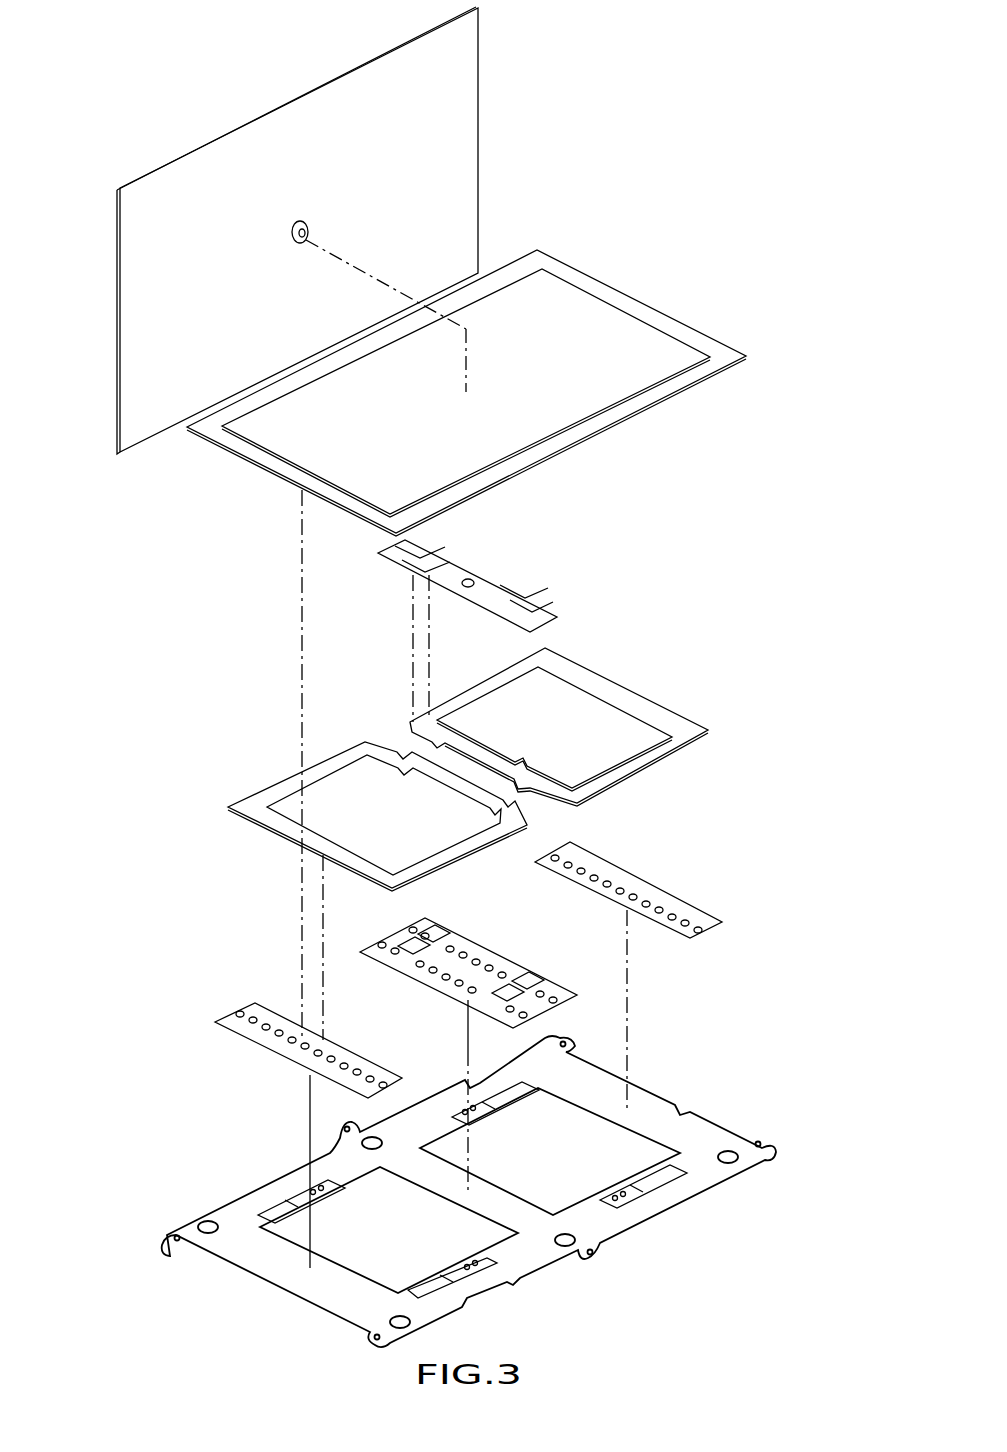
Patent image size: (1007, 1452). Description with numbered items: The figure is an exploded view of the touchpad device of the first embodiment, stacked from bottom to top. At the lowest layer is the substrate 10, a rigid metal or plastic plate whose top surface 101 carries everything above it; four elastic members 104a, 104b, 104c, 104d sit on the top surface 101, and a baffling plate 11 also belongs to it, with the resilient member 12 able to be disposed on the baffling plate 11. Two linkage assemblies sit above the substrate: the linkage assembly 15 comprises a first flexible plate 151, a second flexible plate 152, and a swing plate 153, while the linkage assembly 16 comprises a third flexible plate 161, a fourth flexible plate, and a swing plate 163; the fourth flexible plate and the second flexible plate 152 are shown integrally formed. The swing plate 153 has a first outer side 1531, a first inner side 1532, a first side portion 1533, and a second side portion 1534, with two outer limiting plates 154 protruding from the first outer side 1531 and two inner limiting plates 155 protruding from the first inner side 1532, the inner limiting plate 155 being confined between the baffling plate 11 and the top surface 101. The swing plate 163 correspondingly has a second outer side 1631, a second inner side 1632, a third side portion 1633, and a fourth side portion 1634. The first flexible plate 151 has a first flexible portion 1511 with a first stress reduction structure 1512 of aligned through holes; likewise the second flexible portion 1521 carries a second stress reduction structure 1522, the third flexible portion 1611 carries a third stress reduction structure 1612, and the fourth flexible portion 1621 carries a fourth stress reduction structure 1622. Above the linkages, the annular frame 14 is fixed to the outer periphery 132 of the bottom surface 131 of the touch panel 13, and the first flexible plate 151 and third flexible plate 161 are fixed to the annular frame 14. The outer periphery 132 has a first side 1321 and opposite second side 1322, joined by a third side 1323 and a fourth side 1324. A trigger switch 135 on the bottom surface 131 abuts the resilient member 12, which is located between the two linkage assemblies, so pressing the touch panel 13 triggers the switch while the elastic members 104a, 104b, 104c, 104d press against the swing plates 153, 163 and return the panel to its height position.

The substrate 10 is at (469, 1191).
The top surface 101 is at (225, 1205).
The elastic member 104a is at (433, 1280).
The elastic member 104b is at (280, 1205).
The elastic member 104c is at (608, 1190).
The elastic member 104d is at (500, 1100).
The baffling plate 11 is at (498, 598).
The resilient member 12 is at (468, 578).
The touch panel 13 is at (310, 230).
The bottom surface 131 is at (443, 153).
The outer periphery 132 is at (348, 19).
The first side 1321 is at (130, 247).
The second side 1322 is at (473, 100).
The third side 1323 is at (287, 118).
The fourth side 1324 is at (232, 385).
The trigger switch 135 is at (308, 232).
The annular frame 14 is at (728, 318).
The linkage assembly 15 is at (362, 800).
The first flexible plate 151 is at (302, 1030).
The first flexible portion 1511 is at (240, 1020).
The first stress reduction structure 1512 is at (270, 1032).
The second flexible plate 152 is at (550, 970).
The second flexible portion 1521 is at (373, 945).
The second stress reduction structure 1522 is at (450, 990).
The swing plate 153 is at (333, 752).
The first outer side 1531 is at (275, 820).
The first inner side 1532 is at (442, 790).
The first side portion 1533 is at (487, 842).
The second side portion 1534 is at (275, 782).
The outer limiting plate 154 is at (232, 812).
The inner limiting plate 155 is at (407, 757).
The linkage assembly 16 is at (574, 721).
The third flexible plate 161 is at (628, 871).
The third flexible portion 1611 is at (672, 912).
The third stress reduction structure 1612 is at (648, 900).
The fourth flexible portion 1621 is at (553, 996).
The fourth stress reduction structure 1622 is at (502, 970).
The swing plate 163 is at (653, 702).
The second outer side 1631 is at (595, 685).
The second inner side 1632 is at (517, 758).
The third side portion 1633 is at (653, 770).
The fourth side portion 1634 is at (470, 700).